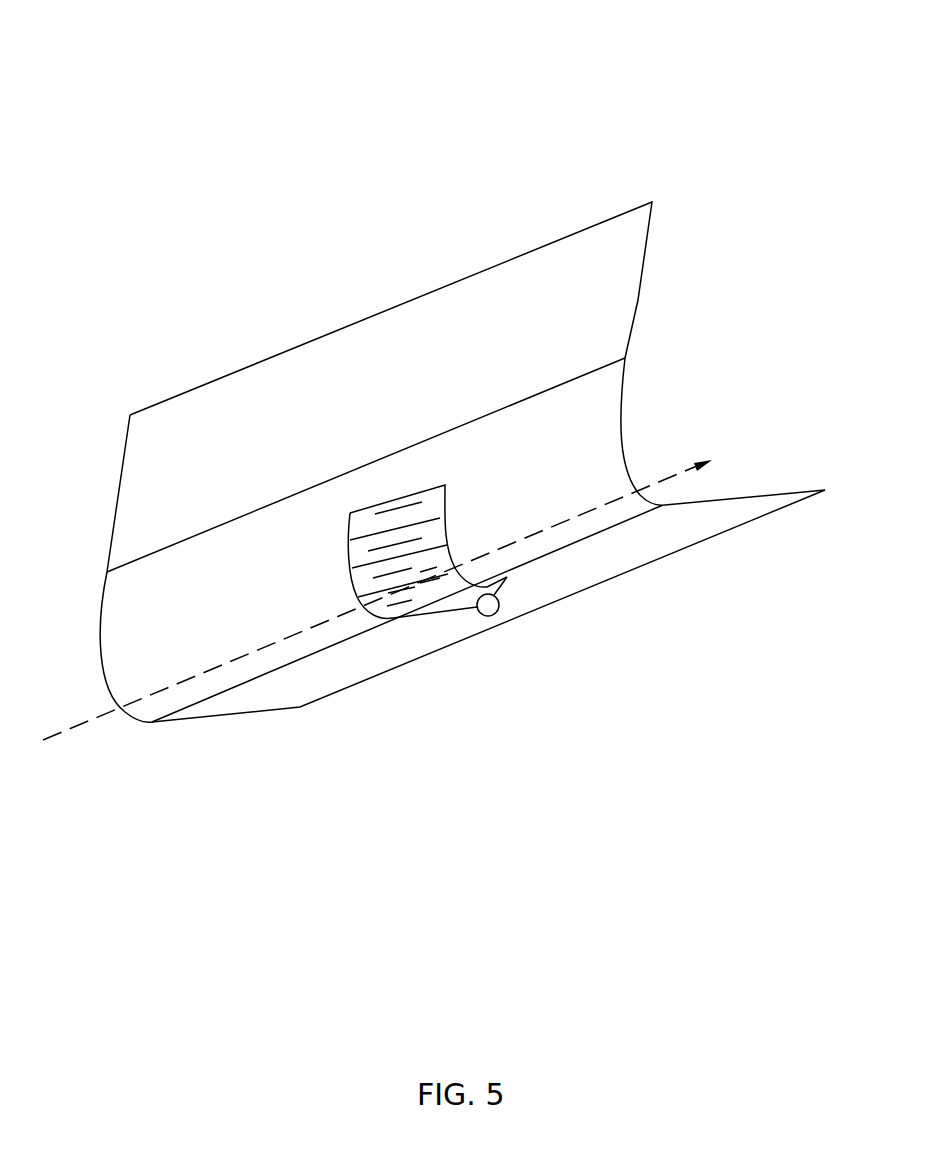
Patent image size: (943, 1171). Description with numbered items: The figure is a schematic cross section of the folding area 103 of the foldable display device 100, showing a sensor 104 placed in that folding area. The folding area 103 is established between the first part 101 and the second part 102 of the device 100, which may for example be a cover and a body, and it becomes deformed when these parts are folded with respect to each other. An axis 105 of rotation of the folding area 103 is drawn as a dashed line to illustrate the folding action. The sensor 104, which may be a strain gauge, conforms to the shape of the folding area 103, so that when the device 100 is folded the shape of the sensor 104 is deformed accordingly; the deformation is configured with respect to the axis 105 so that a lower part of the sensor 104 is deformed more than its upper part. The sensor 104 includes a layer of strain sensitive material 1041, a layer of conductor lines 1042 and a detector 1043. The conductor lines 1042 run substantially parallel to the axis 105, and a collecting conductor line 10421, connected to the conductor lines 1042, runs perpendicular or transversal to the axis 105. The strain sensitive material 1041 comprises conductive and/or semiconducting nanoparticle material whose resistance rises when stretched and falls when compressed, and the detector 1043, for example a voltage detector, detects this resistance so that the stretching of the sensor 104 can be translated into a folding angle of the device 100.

The device 100 is at (443, 82).
The first part 101 is at (652, 201).
The second part 102 is at (303, 705).
The folding area 103 is at (690, 400).
The sensor 104 is at (525, 550).
The layer of strain sensitive material 1041 is at (433, 500).
The layer of conductor lines 1042 is at (375, 500).
The collecting conductor line 10421 is at (347, 532).
The detector 1043 is at (500, 611).
The axis of rotation 105 is at (90, 722).